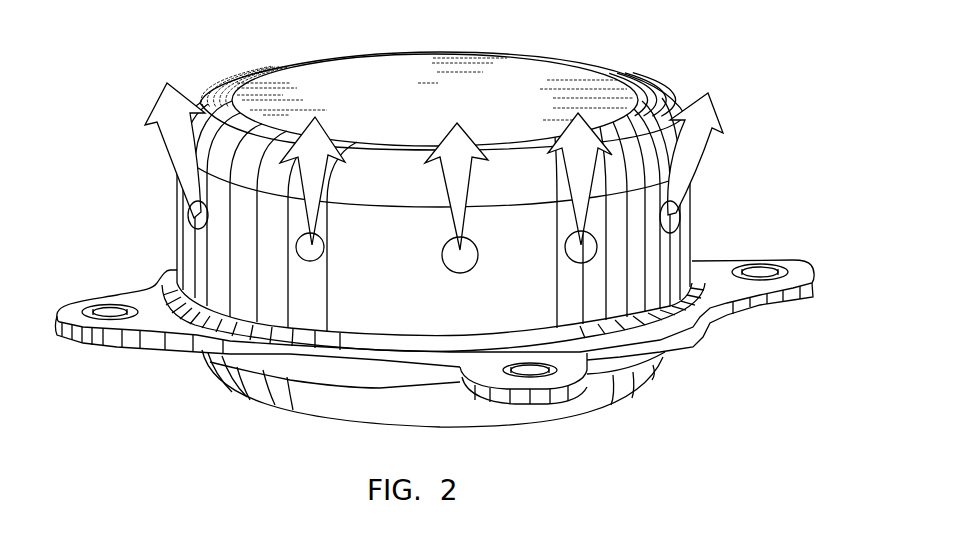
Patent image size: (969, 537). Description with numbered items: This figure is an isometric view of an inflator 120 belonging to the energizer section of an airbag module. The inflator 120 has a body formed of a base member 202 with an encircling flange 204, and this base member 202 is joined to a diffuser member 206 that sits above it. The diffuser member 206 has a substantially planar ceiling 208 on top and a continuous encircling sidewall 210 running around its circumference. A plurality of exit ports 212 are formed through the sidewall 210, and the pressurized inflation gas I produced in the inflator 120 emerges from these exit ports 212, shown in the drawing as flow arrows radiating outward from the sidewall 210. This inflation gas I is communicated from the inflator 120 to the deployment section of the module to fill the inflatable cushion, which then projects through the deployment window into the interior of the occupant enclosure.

The inflator 120 is at (227, 67).
The pressurized inflation gas I is at (441, 152).
The base member 202 is at (260, 407).
The encircling flange 204 is at (150, 350).
The diffuser member 206 is at (672, 118).
The ceiling 208 is at (575, 92).
The sidewall 210 is at (699, 221).
The exit ports 212 is at (470, 242).